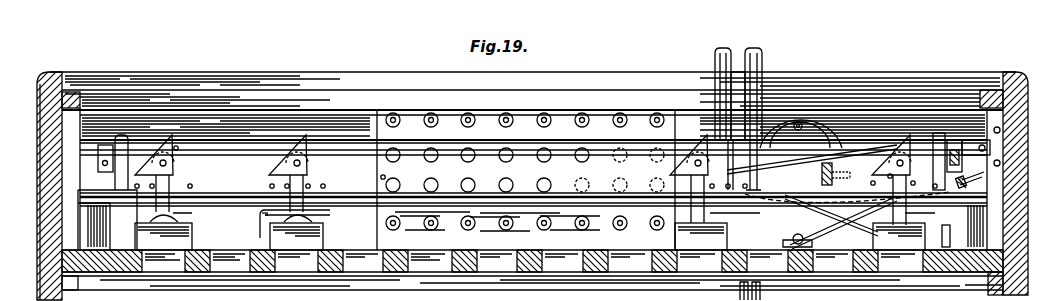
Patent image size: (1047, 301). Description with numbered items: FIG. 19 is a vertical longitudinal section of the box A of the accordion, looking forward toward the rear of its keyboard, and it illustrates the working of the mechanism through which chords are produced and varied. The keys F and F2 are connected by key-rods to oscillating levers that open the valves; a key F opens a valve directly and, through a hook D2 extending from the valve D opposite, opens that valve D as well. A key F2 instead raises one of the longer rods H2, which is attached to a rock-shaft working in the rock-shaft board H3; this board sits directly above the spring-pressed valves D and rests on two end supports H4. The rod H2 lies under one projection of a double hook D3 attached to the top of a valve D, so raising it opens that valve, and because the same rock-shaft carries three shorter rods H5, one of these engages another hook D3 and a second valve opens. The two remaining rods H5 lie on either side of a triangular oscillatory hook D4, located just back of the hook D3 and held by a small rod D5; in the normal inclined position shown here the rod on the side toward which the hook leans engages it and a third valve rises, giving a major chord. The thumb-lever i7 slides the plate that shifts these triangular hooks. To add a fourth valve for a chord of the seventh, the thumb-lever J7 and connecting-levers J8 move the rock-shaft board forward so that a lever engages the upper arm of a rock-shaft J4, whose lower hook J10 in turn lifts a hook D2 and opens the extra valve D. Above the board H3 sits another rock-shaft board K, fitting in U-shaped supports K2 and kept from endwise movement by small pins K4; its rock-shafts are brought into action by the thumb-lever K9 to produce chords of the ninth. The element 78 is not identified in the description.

The U-shaped support K2 is at (128, 137).
The triangular oscillatory hook D4 is at (140, 172).
The double hook D3 is at (180, 136).
The rod H2 is at (256, 112).
The key F is at (395, 114).
The key F2 is at (433, 114).
The rock-shaft board K is at (577, 133).
The rock-shaft board H3 is at (615, 213).
The valve D is at (192, 237).
The hook D2 is at (190, 214).
The rock-shaft J4 is at (260, 230).
The hook J10 is at (262, 213).
The pin K4 is at (98, 170).
The rod D5 is at (906, 145).
The connecting-lever J8 is at (984, 178).
The thumb-lever i7 is at (718, 49).
The thumb-lever K9 is at (763, 52).
The thumb-lever J7 is at (738, 70).
The cam 78 is at (853, 150).
The rod H5 is at (152, 190).
The end support H4 is at (80, 222).
The box A is at (23, 192).